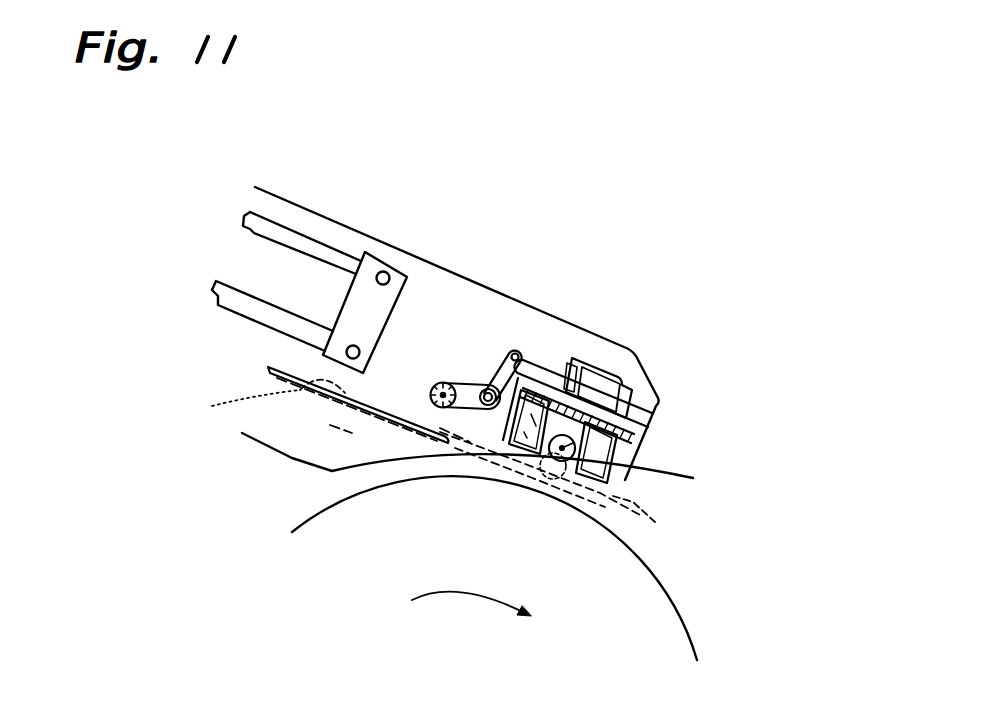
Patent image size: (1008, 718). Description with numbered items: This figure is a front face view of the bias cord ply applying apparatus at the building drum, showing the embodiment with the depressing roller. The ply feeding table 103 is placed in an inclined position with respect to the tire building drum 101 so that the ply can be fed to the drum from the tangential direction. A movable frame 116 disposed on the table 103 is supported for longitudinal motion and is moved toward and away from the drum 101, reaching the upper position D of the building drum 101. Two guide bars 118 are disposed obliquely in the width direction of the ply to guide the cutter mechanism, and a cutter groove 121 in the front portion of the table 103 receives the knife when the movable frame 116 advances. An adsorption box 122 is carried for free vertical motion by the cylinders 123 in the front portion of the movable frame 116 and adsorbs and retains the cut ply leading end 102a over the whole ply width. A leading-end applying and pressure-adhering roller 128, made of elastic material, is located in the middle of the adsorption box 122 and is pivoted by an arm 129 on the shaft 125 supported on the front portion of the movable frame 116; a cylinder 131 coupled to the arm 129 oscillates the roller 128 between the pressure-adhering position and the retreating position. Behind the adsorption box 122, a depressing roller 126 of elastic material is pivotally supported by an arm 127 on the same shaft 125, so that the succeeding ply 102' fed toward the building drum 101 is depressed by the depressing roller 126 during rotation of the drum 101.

The tire building drum 101 is at (692, 612).
The succeeding ply 102' is at (242, 407).
The ply leading end 102a is at (655, 522).
The ply feeding table 103 is at (302, 447).
The movable frame 116 is at (513, 298).
The guide bars 118 is at (230, 297).
The cutter groove 121 is at (447, 438).
The adsorption box 122 is at (638, 450).
The cylinders 123 is at (601, 375).
The shaft 125 is at (470, 443).
The depressing roller 126 is at (441, 382).
The arm 127 is at (470, 385).
The leading-end applying and pressure-adhering roller 128 is at (630, 470).
The arm 129 is at (471, 443).
The cylinder 131 is at (613, 398).
The upper position of the building drum D is at (583, 285).